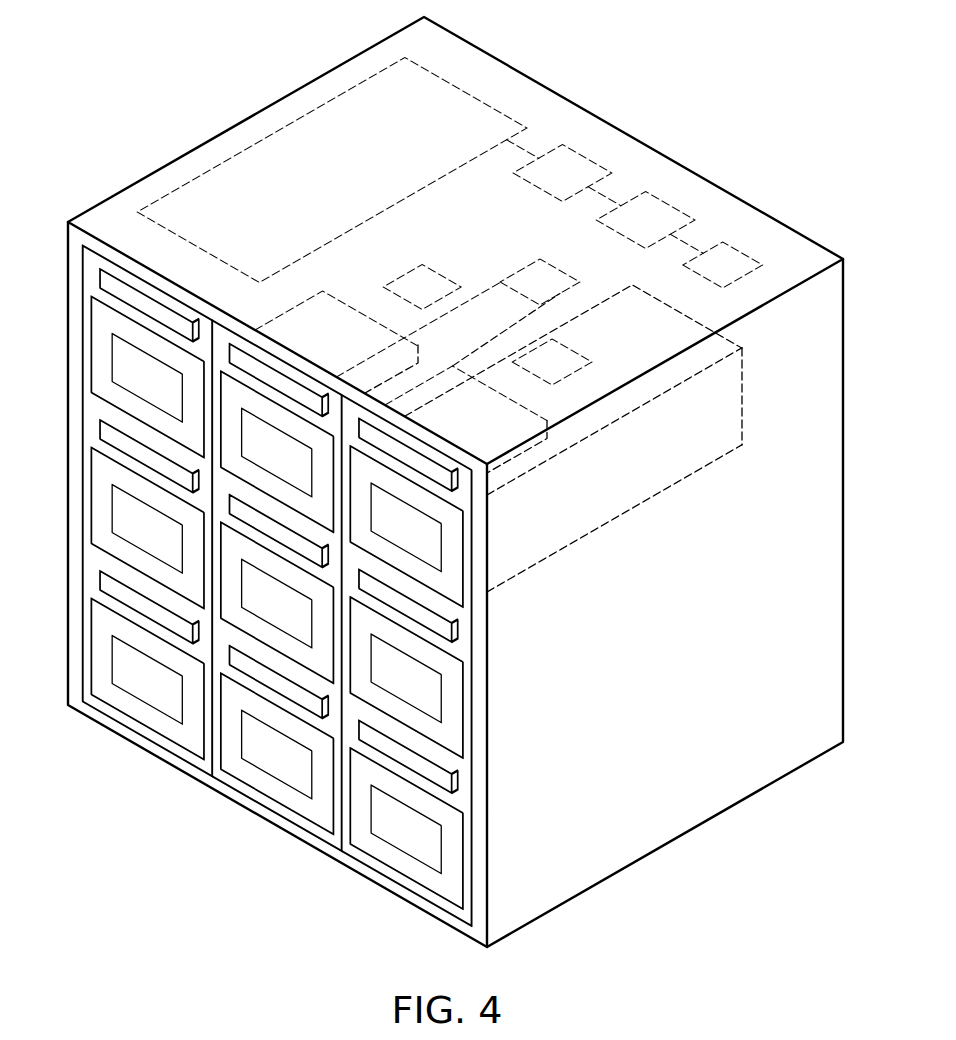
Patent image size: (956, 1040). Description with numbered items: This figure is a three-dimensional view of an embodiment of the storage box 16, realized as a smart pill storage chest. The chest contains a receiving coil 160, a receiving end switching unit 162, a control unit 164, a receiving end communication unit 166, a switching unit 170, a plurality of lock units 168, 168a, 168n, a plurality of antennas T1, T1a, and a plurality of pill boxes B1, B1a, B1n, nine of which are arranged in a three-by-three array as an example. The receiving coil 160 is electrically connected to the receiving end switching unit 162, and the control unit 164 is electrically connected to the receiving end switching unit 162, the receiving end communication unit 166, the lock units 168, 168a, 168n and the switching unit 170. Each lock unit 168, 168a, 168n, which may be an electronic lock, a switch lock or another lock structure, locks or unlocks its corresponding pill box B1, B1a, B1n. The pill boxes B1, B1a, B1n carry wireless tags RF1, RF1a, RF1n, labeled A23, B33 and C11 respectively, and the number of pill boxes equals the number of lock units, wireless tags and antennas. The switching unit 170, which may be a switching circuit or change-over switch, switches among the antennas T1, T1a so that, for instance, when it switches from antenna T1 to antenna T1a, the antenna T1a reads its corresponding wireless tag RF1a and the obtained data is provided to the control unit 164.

The storage box 16 is at (233, 93).
The receiving coil 160 is at (460, 88).
The receiving end switching unit 162 is at (588, 157).
The control unit 164 is at (672, 202).
The receiving end communication unit 166 is at (737, 248).
The lock unit 168 is at (407, 455).
The lock unit 168a is at (287, 388).
The lock unit 168n is at (133, 595).
The switching unit 170 is at (697, 375).
The antenna T1 is at (537, 348).
The antenna T1a is at (441, 270).
The wireless tag RF1 is at (441, 547).
The wireless tag RF1a is at (313, 470).
The wireless tag RF1n is at (184, 694).
The pill box B1 is at (407, 562).
The pill box B1a is at (277, 487).
The pill box B1n is at (155, 717).